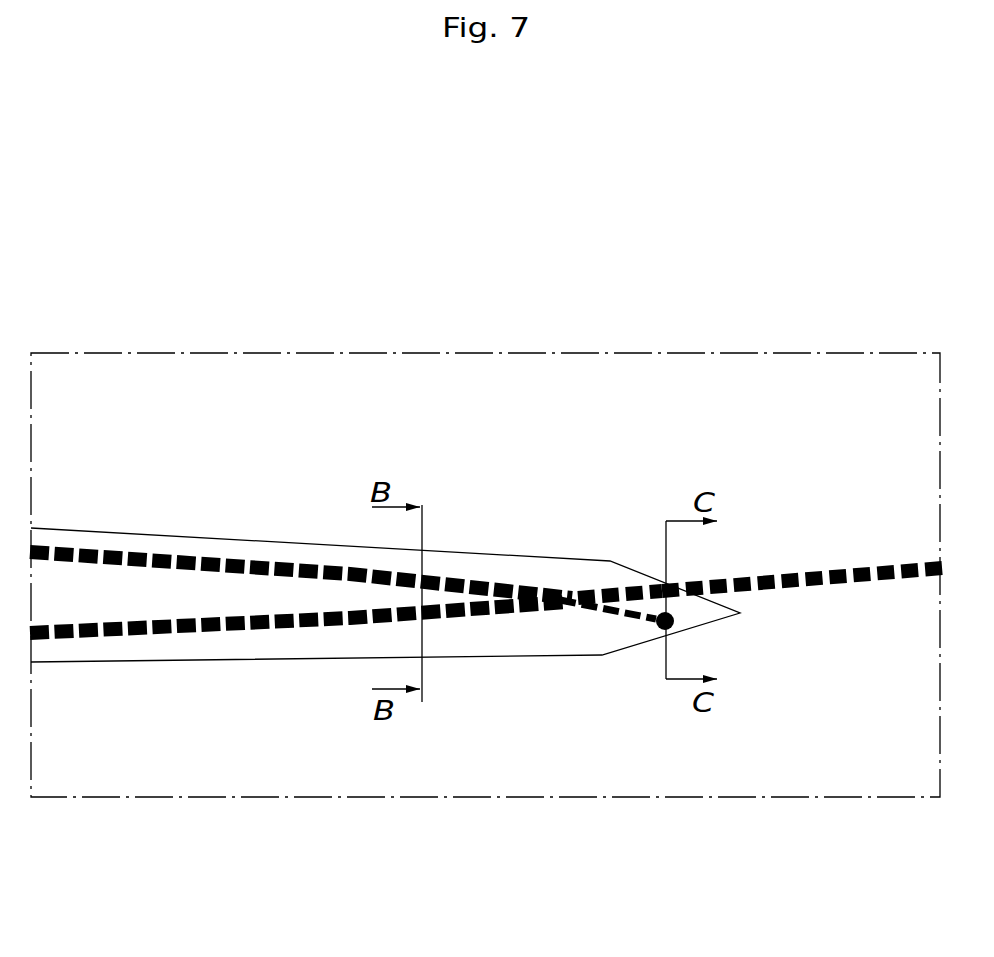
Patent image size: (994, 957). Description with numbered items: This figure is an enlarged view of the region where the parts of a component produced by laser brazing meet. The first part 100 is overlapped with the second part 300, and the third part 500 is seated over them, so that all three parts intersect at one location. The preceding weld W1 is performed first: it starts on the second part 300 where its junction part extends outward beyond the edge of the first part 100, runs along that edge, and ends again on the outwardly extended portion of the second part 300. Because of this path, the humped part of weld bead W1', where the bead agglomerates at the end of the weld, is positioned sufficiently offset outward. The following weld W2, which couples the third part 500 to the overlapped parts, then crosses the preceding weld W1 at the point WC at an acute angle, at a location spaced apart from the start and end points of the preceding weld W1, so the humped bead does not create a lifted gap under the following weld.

The first part 100 is at (657, 410).
The second part 300 is at (182, 663).
The third part 500 is at (778, 748).
The preceding weld W1 is at (301, 431).
The intersection point of welds WC is at (570, 600).
The following weld W2 is at (840, 568).
The humped part of weld bead W1' is at (617, 752).